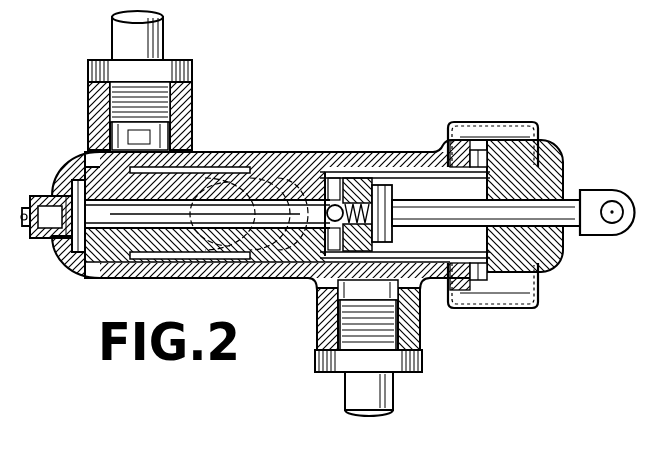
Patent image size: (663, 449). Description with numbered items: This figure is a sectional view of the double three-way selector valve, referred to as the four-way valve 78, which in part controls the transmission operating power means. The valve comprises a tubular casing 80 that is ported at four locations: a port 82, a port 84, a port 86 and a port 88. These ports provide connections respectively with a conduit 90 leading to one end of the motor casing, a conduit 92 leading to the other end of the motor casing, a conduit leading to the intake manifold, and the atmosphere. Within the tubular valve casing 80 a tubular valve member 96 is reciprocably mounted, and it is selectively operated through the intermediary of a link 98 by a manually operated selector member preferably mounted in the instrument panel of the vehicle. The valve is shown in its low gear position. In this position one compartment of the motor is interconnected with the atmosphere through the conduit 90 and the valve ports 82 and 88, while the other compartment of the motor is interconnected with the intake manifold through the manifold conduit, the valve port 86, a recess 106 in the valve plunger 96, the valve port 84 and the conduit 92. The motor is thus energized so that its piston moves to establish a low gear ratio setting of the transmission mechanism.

The four-way valve 78 is at (345, 152).
The tubular casing 80 is at (157, 278).
The port 82 is at (420, 338).
The port 84 is at (120, 100).
The port 86 is at (265, 178).
The port 88 is at (474, 160).
The conduit 90 is at (350, 384).
The conduit 92 is at (125, 44).
The tubular valve member 96 is at (110, 180).
The link 98 is at (561, 212).
The recess 106 is at (199, 170).